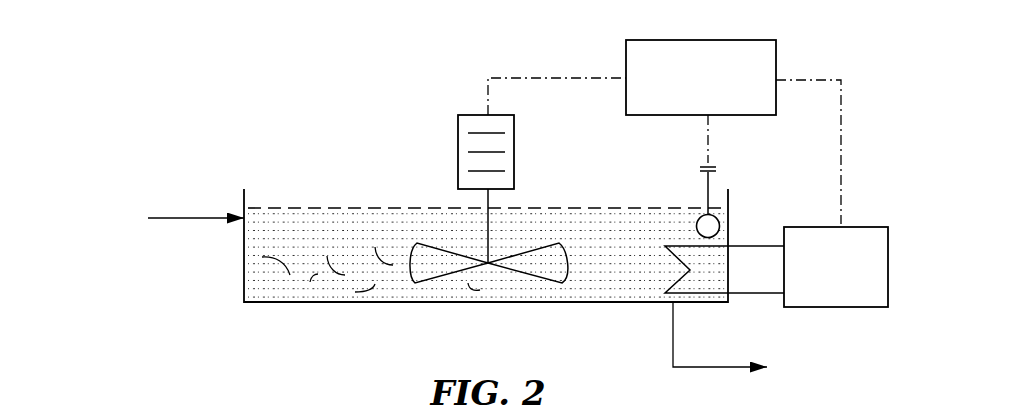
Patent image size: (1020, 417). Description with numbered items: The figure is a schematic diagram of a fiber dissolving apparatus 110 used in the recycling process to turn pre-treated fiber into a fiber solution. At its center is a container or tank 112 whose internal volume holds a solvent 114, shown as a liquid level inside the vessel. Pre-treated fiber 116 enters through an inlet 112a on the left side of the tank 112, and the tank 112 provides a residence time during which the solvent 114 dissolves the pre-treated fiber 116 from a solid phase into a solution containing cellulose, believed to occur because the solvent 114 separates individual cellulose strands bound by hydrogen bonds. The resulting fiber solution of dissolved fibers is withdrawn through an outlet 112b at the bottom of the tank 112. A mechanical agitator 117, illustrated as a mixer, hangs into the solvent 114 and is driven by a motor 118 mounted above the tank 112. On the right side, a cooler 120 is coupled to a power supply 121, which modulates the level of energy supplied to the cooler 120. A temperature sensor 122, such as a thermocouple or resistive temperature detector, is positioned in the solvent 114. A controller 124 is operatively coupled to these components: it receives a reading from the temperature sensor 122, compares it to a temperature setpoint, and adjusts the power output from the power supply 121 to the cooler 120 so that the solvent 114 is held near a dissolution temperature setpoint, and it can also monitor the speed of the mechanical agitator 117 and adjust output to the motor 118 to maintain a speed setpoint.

The fiber dissolving apparatus 110 is at (263, 133).
The tank 112 is at (244, 286).
The inlet 112a is at (232, 205).
The outlet 112b is at (667, 327).
The solvent 114 is at (323, 218).
The pre-treated fiber 116 is at (285, 293).
The mechanical agitator 117 is at (566, 283).
The motor 118 is at (458, 170).
The cooler 120 is at (698, 293).
The power supply 121 is at (862, 227).
The temperature sensor 122 is at (720, 228).
The controller 124 is at (777, 50).